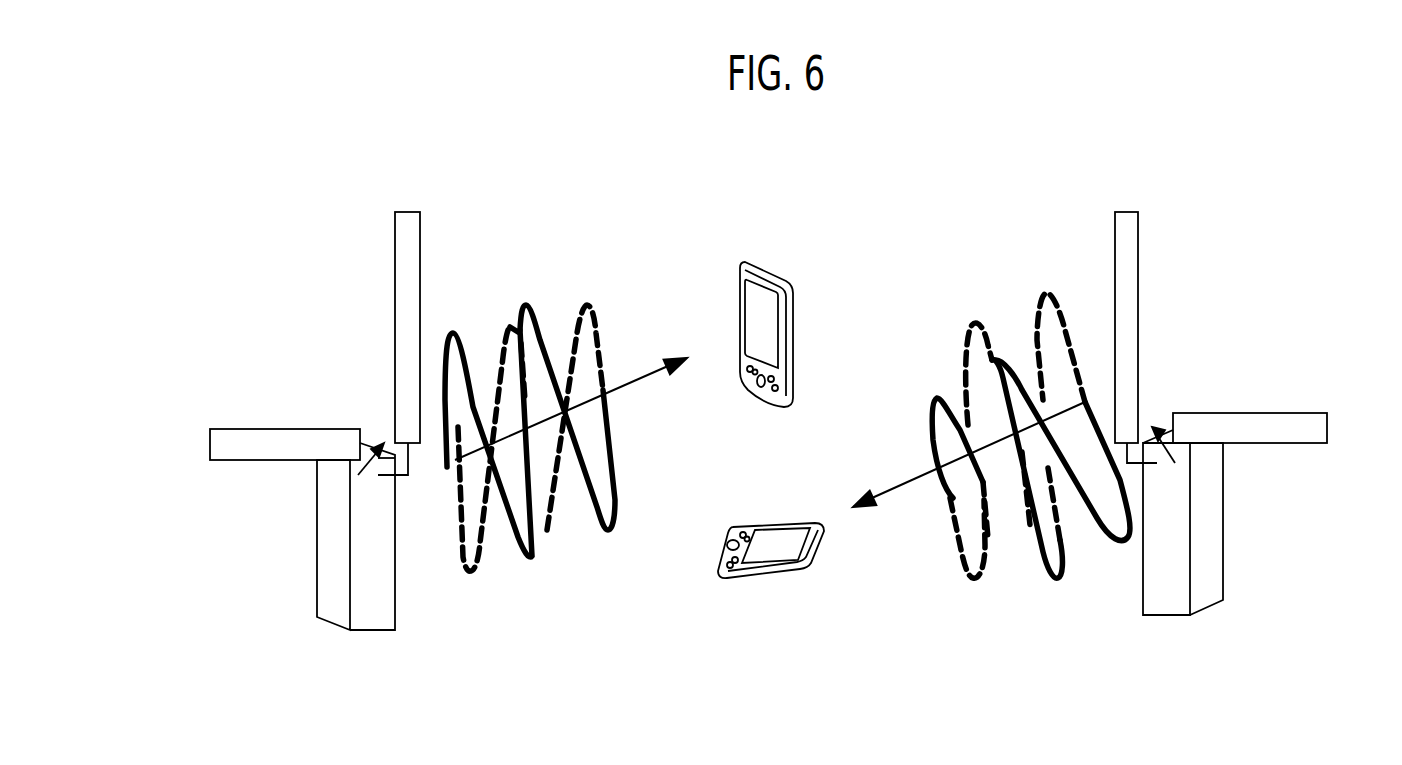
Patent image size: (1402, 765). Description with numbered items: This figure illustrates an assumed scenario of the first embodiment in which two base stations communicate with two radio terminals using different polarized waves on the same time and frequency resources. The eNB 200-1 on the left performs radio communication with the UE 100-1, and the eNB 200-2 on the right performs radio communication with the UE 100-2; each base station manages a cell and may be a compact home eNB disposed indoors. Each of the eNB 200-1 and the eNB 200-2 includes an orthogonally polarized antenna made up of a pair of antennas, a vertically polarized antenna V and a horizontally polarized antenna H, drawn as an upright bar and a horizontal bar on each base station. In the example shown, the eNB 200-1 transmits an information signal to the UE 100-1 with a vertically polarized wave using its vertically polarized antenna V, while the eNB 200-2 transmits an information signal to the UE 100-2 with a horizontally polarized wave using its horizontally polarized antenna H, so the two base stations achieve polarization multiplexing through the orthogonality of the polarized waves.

The UE 100-1 is at (806, 250).
The UE 100-2 is at (797, 520).
The eNB 200-1 is at (368, 623).
The eNB 200-2 is at (1162, 615).
The horizontally polarized antenna H is at (278, 429).
The vertically polarized antenna V is at (408, 212).